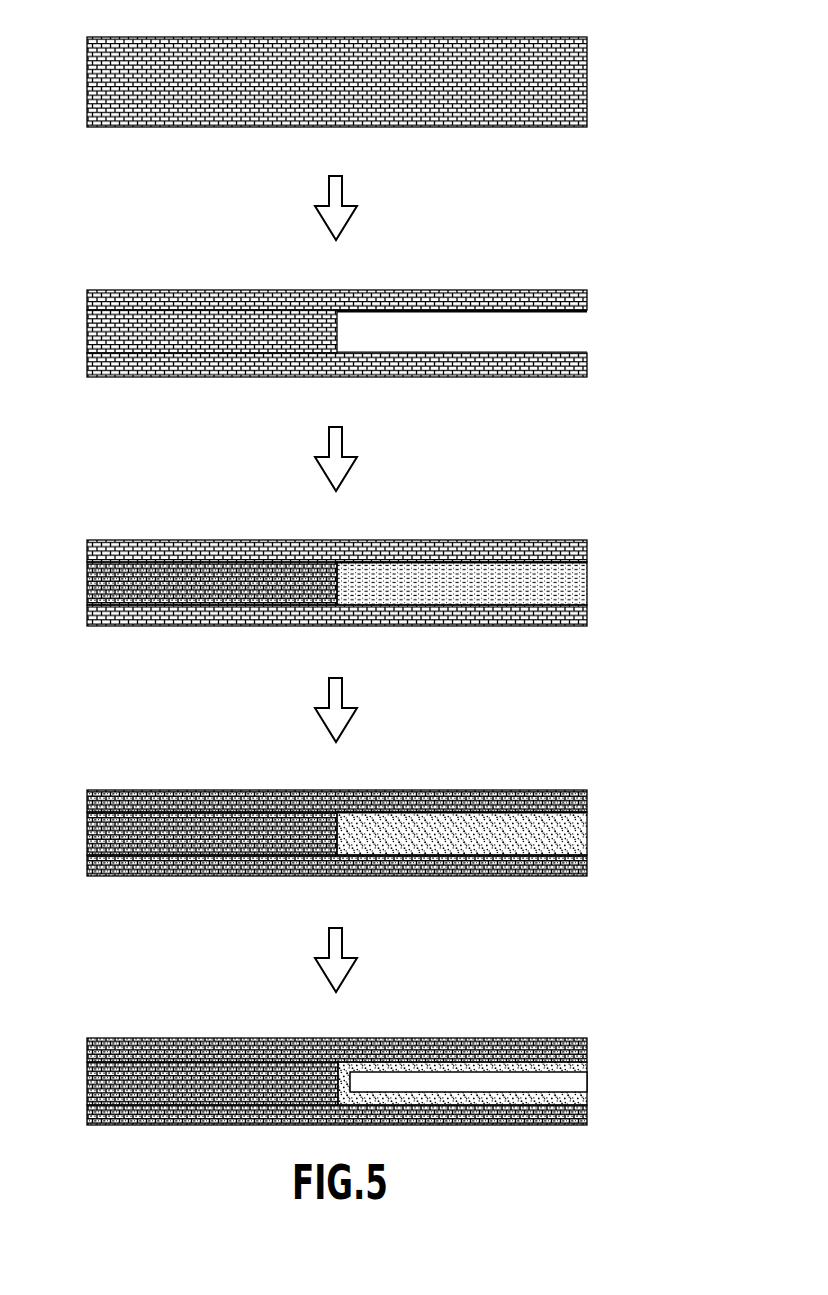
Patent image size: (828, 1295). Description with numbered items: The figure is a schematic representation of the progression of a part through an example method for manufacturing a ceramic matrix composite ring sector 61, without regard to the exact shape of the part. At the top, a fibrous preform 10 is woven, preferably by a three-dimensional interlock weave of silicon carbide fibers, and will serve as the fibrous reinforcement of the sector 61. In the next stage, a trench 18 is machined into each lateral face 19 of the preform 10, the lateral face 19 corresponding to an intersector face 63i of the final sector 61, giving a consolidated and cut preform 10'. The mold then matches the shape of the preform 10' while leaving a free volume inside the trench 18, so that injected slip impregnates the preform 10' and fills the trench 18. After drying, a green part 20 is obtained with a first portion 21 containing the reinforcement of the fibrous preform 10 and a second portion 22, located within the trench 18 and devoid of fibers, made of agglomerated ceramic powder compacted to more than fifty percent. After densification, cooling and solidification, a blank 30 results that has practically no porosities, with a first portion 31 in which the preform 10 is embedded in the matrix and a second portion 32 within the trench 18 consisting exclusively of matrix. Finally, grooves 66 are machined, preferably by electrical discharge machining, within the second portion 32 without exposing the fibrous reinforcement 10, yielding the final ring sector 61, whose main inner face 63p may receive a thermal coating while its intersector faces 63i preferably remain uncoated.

The fibrous preform 10 is at (373, 544).
The consolidated and cut preform 10' is at (393, 540).
The trench 18 is at (575, 313).
The lateral face 19 is at (587, 302).
The green part 20 is at (368, 582).
The first portion of the green part 21 is at (100, 583).
The second portion of the green part 22 is at (570, 583).
The blank 30 is at (368, 831).
The first portion of the blank 31 is at (100, 833).
The second portion of the blank 32 is at (578, 838).
The ring sector 61 is at (393, 1086).
The intersector face 63i is at (587, 1050).
The main inner face 63p is at (540, 1128).
The groove 66 is at (578, 1075).